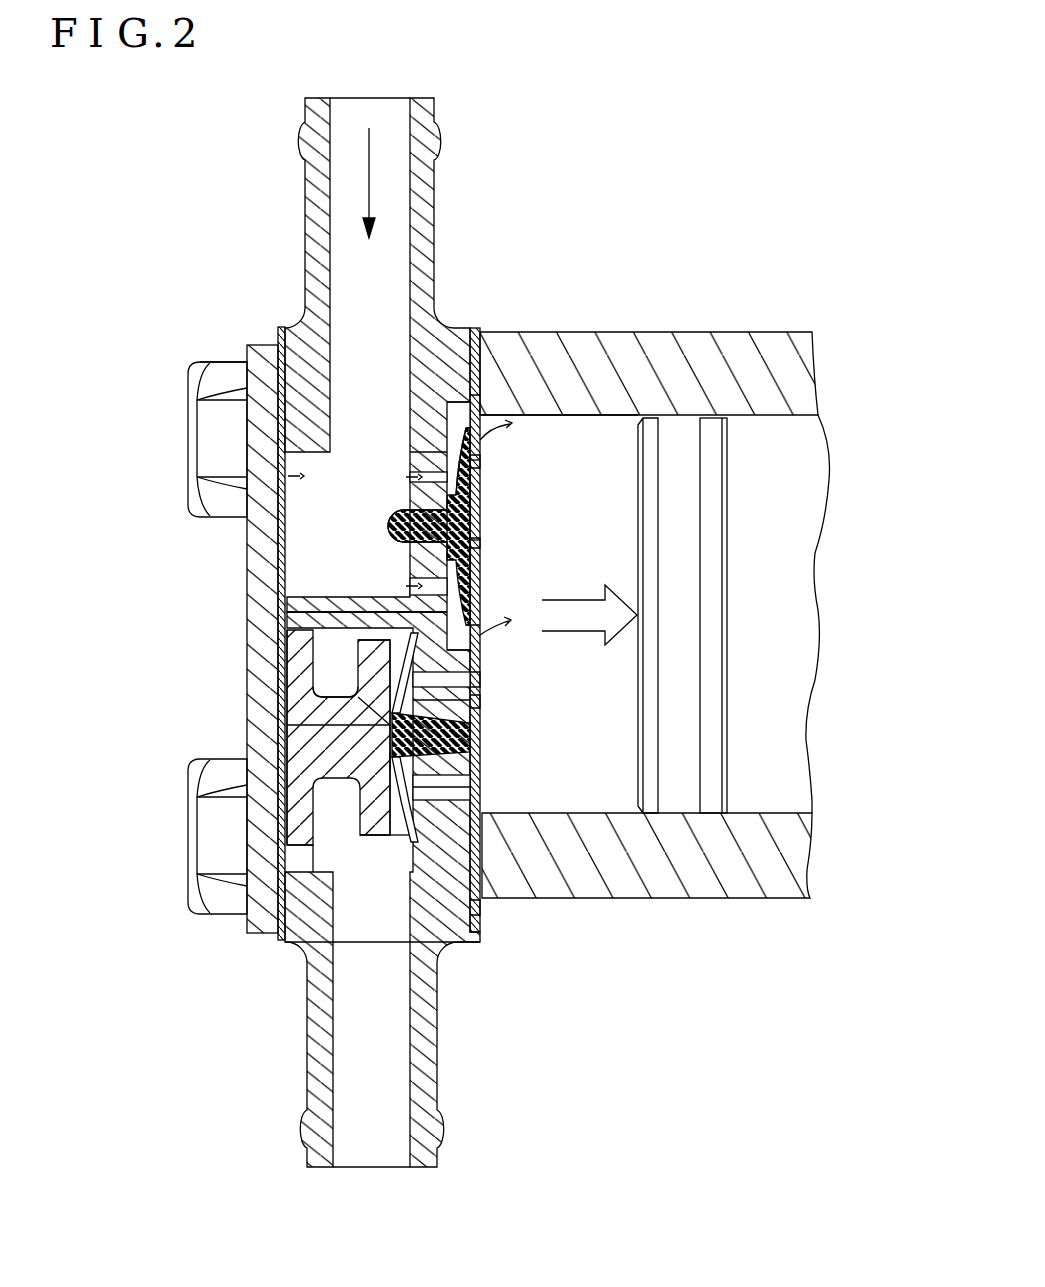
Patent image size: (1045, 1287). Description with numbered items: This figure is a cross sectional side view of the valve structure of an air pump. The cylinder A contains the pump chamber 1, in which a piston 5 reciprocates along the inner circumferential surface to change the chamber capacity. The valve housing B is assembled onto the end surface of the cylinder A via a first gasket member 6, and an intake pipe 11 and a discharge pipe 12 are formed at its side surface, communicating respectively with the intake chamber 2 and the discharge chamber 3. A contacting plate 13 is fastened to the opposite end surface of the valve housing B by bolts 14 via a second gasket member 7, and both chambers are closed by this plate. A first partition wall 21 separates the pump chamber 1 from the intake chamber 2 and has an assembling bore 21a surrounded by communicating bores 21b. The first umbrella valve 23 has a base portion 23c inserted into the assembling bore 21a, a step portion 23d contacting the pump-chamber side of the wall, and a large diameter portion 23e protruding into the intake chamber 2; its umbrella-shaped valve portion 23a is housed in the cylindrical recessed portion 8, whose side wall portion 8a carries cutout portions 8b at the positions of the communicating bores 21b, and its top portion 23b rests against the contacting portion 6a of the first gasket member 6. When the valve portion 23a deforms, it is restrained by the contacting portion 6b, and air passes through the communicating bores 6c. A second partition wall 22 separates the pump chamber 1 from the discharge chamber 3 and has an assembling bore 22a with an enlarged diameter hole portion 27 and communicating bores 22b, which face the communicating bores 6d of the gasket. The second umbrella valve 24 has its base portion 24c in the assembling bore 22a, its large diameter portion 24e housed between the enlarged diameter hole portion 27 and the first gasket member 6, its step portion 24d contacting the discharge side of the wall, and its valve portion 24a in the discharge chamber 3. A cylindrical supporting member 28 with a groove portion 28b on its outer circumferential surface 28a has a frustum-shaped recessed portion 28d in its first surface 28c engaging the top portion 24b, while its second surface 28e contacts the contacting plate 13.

The pump chamber 1 is at (618, 548).
The intake chamber 2 is at (285, 466).
The discharge chamber 3 is at (288, 934).
The piston 5 is at (638, 718).
The first gasket member 6 is at (480, 365).
The contacting portion 6a is at (480, 542).
The contacting portion 6b is at (481, 440).
The communicating bores 6c is at (481, 408).
The communicating bores 6d is at (481, 684).
The second gasket member 7 is at (285, 535).
The cylindrical recessed portion 8 is at (441, 438).
The side wall portion 8a is at (481, 610).
The cutout portions 8b is at (458, 402).
The intake pipe 11 is at (436, 195).
The discharge pipe 12 is at (307, 1081).
The contacting plate 13 is at (247, 593).
The bolts 14 is at (188, 408).
The first partition wall 21 is at (410, 498).
The assembling bore 21a is at (395, 520).
The communicating bores 21b is at (447, 478).
The second partition wall 22 is at (481, 836).
The assembling bore 22a is at (481, 760).
The communicating bores 22b is at (406, 672).
The first umbrella valve 23 is at (480, 563).
The valve portion 23a is at (434, 432).
The top portion 23b is at (480, 518).
The base portion 23c is at (400, 547).
The step portion 23d is at (402, 583).
The large diameter portion 23e is at (390, 528).
The second umbrella valve 24 is at (378, 792).
The valve portion 24a is at (408, 838).
The top portion 24b is at (382, 702).
The base portion 24c is at (388, 756).
The step portion 24d is at (481, 790).
The large diameter portion 24e is at (482, 732).
The enlarged diameter hole portion 27 is at (481, 702).
The supporting member 28 is at (282, 652).
The outer circumferential surface 28a is at (318, 865).
The groove portion 28b is at (318, 833).
The first surface 28c is at (475, 904).
The recessed portion 28d is at (287, 725).
The second surface 28e is at (280, 681).
The cylinder A is at (722, 332).
The valve housing B is at (190, 373).